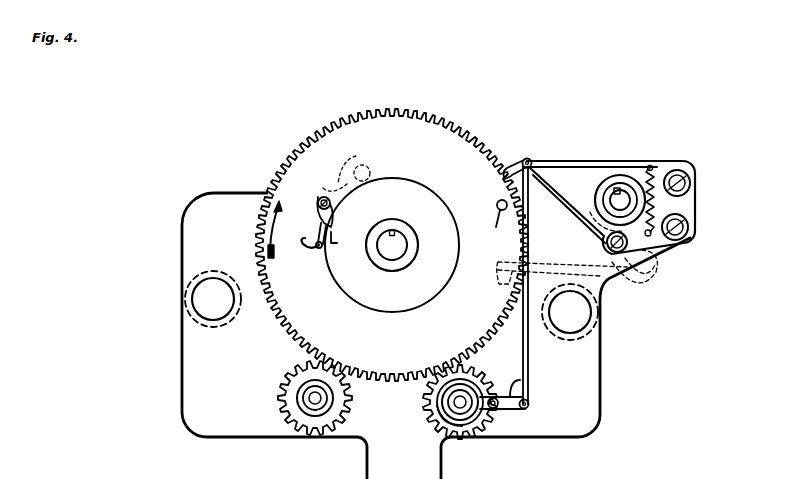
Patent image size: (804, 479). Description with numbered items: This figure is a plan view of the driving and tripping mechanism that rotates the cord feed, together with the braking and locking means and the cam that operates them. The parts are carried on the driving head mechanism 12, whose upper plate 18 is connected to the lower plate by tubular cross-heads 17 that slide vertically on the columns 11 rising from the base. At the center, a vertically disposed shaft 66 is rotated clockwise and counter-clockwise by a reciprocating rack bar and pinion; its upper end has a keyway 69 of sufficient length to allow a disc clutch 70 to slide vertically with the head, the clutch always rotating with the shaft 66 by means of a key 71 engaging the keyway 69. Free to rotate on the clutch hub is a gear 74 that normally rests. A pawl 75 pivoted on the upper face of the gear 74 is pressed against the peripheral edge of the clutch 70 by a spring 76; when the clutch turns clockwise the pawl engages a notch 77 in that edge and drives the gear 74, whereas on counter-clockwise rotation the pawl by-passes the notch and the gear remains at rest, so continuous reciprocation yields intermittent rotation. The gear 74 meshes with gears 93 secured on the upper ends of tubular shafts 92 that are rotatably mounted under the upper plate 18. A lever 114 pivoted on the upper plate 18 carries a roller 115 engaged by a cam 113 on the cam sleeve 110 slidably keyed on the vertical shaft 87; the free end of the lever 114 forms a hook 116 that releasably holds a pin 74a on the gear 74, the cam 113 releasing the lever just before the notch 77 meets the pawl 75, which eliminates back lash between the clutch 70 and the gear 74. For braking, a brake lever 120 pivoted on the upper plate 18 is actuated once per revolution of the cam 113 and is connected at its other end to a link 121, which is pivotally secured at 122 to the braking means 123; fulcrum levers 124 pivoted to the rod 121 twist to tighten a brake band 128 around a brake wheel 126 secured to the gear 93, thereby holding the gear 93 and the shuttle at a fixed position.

The column 11 is at (205, 301).
The driving head mechanism 12 is at (502, 122).
The cross-head 17 is at (192, 319).
The upper plate 18 is at (600, 376).
The shaft 66 is at (404, 244).
The keyway 69 is at (381, 248).
The disc clutch 70 is at (388, 181).
The key 71 is at (394, 231).
The gear 74 is at (441, 120).
The pin 74a is at (495, 226).
The pawl 75 is at (349, 152).
The spring 76 is at (330, 176).
The notch 77 is at (342, 244).
The shaft 87 is at (624, 189).
The tubular shaft 92 is at (322, 398).
The gear 93 is at (284, 406).
The cam sleeve 110 is at (623, 185).
The cam 113 is at (588, 200).
The lever 114 is at (560, 206).
The roller 115 is at (618, 280).
The hook 116 is at (527, 159).
The brake lever 120 is at (574, 150).
The link 121 is at (529, 356).
The pivot 122 is at (529, 404).
The braking means 123 is at (442, 414).
The fulcrum lever 124 is at (524, 382).
The brake wheel 126 is at (446, 403).
The brake band 128 is at (448, 420).